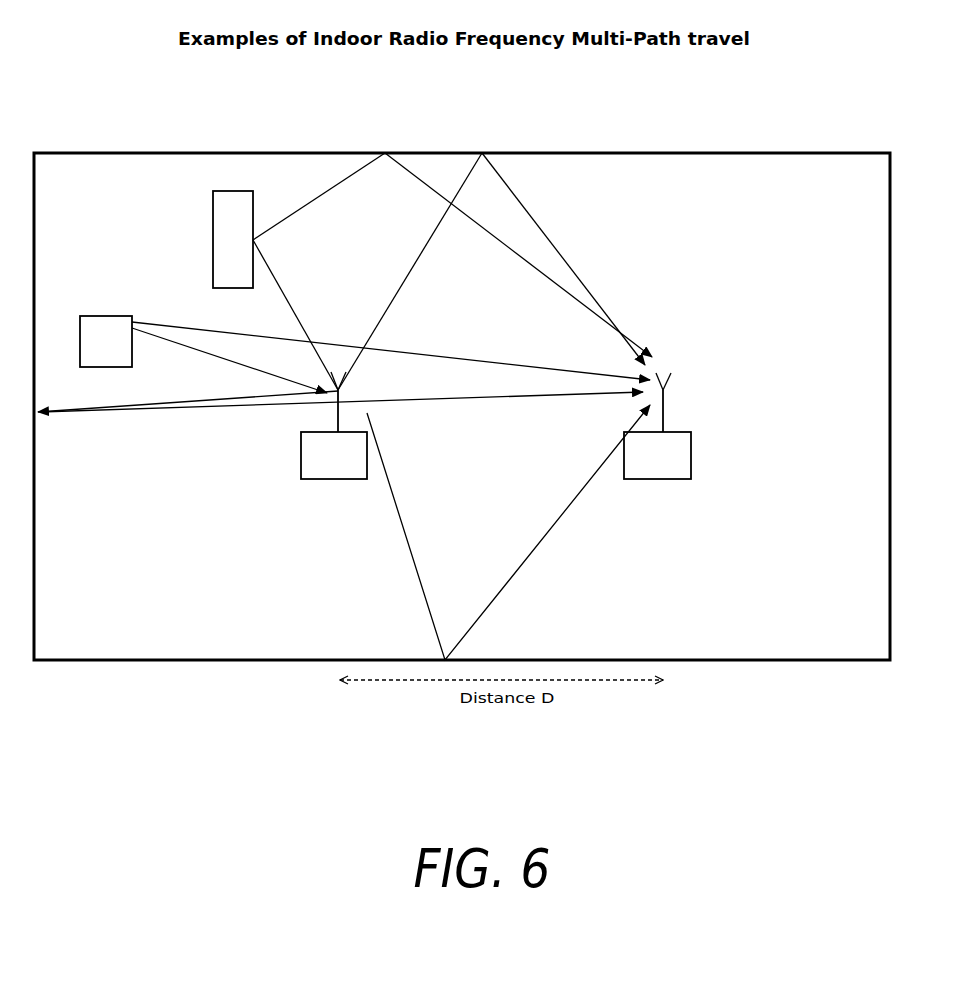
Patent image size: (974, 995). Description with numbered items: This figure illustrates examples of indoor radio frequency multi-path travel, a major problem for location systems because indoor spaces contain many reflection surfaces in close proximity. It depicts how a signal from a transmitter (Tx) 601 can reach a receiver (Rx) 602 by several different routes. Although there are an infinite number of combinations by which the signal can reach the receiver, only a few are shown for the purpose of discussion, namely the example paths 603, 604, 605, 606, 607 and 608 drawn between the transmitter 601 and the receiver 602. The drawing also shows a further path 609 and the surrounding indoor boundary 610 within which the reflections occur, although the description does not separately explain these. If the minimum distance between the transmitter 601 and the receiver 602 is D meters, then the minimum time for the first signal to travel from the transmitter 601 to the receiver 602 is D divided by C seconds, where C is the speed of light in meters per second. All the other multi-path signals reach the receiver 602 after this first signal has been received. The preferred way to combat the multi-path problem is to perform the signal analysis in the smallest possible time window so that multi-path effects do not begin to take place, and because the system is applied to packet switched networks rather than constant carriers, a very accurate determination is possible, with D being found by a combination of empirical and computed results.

The transmitter (Tx) 601 is at (334, 442).
The receiver (Rx) 602 is at (657, 442).
The signal path example 603 is at (106, 327).
The signal path example 604 is at (235, 225).
The signal path example 605 is at (518, 255).
The signal path example 606 is at (319, 196).
The signal path example 607 is at (391, 351).
The signal path example 608 is at (341, 408).
The floor-reflected signal path 609 is at (508, 532).
The indoor environment boundary 610 is at (492, 406).